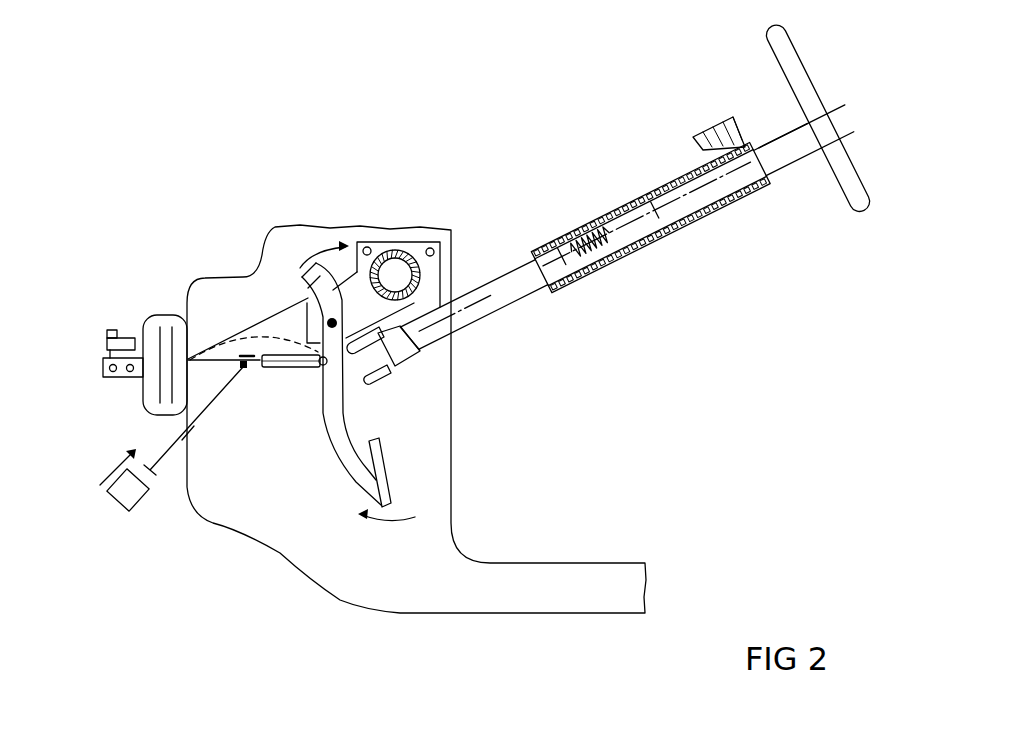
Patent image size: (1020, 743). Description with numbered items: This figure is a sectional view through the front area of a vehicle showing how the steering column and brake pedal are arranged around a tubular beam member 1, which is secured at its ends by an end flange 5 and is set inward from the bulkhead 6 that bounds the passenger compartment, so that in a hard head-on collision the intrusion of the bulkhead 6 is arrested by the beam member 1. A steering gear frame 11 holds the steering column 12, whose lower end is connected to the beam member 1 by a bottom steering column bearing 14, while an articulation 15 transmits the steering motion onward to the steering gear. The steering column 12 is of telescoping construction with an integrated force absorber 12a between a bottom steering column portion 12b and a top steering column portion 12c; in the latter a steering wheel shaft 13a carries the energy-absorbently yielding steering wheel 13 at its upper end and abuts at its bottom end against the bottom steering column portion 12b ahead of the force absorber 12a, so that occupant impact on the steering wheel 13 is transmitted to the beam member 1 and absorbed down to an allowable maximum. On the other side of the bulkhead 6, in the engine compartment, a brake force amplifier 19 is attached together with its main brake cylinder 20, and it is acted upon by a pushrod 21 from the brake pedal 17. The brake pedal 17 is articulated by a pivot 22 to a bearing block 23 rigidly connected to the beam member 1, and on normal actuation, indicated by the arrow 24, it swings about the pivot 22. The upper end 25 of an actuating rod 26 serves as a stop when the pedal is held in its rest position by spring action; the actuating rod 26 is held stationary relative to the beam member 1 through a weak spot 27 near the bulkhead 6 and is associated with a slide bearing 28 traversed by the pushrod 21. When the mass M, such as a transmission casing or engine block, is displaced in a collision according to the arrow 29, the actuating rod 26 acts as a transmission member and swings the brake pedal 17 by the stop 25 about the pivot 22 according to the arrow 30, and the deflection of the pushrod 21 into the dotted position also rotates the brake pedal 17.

The tubular beam member 1 is at (388, 253).
The end flange 5 is at (418, 250).
The bulkhead 6 is at (187, 300).
The steering gear frame 11 is at (717, 135).
The steering column 12 is at (628, 170).
The force absorber 12a is at (607, 220).
The bottom steering column portion 12b is at (498, 283).
The top steering column portion 12c is at (670, 178).
The steering wheel 13 is at (812, 108).
The steering wheel shaft 13a is at (778, 132).
The bottom steering column bearing 14 is at (427, 297).
The articulation 15 is at (385, 375).
The brake pedal 17 is at (335, 420).
The brake force amplifier 19 is at (152, 320).
The main brake cylinder 20 is at (104, 354).
The pushrod 21 is at (293, 363).
The pivot 22 is at (332, 318).
The bearing block 23 is at (345, 293).
The arrow 24 is at (393, 520).
The upper end of actuating rod 25 is at (293, 308).
The actuating rod 26 is at (163, 455).
The weak spot 27 is at (189, 436).
The slide bearing 28 is at (244, 366).
The arrow 29 is at (107, 478).
The arrow 30 is at (302, 263).